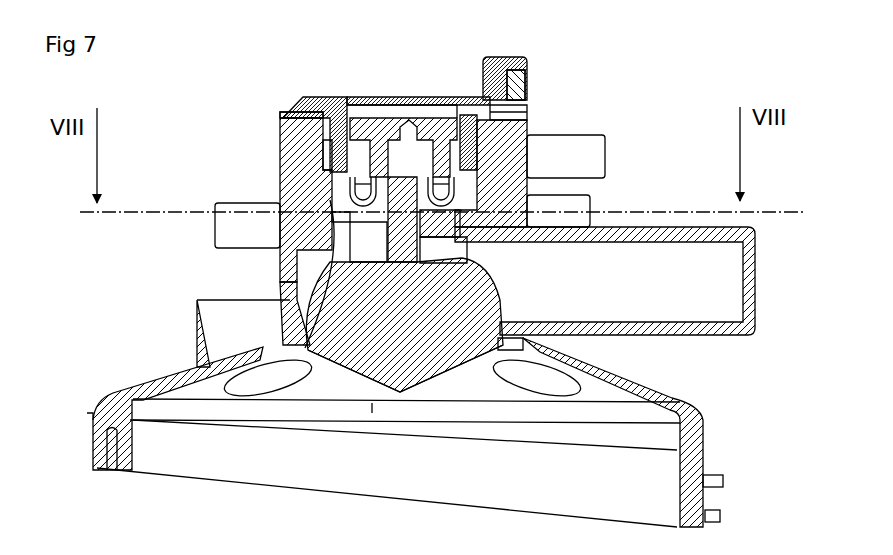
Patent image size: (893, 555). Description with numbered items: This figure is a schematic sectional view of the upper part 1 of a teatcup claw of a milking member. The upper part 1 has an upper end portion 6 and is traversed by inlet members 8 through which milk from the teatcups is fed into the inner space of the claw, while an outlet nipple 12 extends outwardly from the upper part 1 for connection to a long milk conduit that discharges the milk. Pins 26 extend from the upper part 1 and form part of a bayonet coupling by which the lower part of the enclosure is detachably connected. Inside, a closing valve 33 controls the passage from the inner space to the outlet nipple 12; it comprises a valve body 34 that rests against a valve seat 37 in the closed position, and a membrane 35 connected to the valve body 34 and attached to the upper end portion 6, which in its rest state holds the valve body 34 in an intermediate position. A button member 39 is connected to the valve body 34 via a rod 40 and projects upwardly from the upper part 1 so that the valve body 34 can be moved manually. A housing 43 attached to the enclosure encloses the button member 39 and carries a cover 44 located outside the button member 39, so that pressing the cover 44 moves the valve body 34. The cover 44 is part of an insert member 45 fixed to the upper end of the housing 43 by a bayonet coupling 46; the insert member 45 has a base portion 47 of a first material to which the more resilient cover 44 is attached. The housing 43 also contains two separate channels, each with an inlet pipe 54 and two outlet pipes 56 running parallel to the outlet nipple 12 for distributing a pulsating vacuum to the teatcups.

The upper part 1 is at (137, 391).
The upper end portion 6 is at (282, 204).
The inlet members 8 is at (525, 520).
The outlet nipple 12 is at (668, 327).
The pins 26 is at (716, 515).
The closing valve 33 is at (350, 378).
The valve body 34 is at (357, 288).
The membrane 35 is at (440, 197).
The valve seat 37 is at (440, 283).
The button member 39 is at (406, 117).
The rod 40 is at (388, 221).
The housing 43 is at (288, 188).
The cover 44 is at (377, 97).
The insert member 45 is at (290, 113).
The bayonet coupling 46 is at (288, 152).
The base portion 47 is at (302, 96).
The inlet pipe 54 is at (590, 152).
The outlet pipes 56 is at (585, 205).